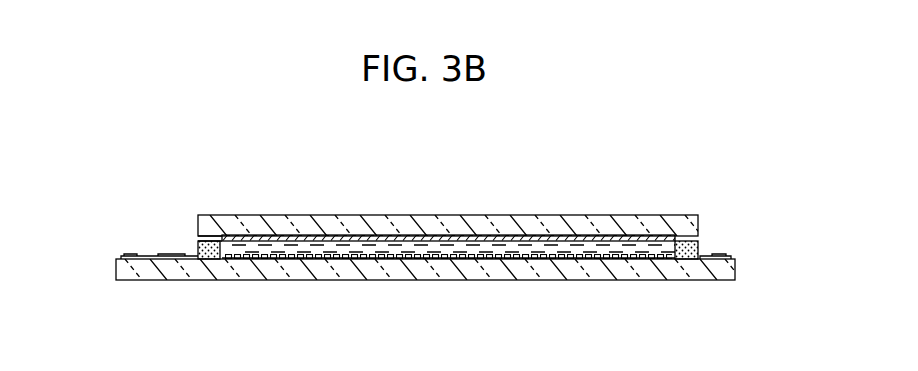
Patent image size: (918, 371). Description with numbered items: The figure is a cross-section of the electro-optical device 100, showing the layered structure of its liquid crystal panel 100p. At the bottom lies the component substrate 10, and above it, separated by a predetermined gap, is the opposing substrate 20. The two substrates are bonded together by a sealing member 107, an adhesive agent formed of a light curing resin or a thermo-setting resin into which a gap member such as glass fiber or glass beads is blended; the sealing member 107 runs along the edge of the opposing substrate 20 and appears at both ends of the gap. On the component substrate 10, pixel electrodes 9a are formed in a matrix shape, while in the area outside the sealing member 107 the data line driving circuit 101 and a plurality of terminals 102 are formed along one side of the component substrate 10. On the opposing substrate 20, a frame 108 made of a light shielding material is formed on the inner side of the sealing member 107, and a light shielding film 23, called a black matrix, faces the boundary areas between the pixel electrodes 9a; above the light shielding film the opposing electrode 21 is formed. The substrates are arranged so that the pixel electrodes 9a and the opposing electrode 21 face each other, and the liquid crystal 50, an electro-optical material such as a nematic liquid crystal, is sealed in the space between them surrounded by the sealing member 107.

The component substrate 10 is at (688, 265).
The opposing substrate 20 is at (678, 215).
The opposing electrode 21 is at (392, 237).
The light shielding film 23 is at (489, 236).
The pixel electrodes 9a is at (413, 259).
The liquid crystal 50 is at (505, 259).
The sealing member 107 is at (227, 259).
The frame 108 is at (232, 236).
The data line driving circuit 101 is at (180, 257).
The terminals 102 is at (137, 257).
The electro-optical device 100 is at (671, 120).
The liquid crystal panel 100p is at (613, 203).